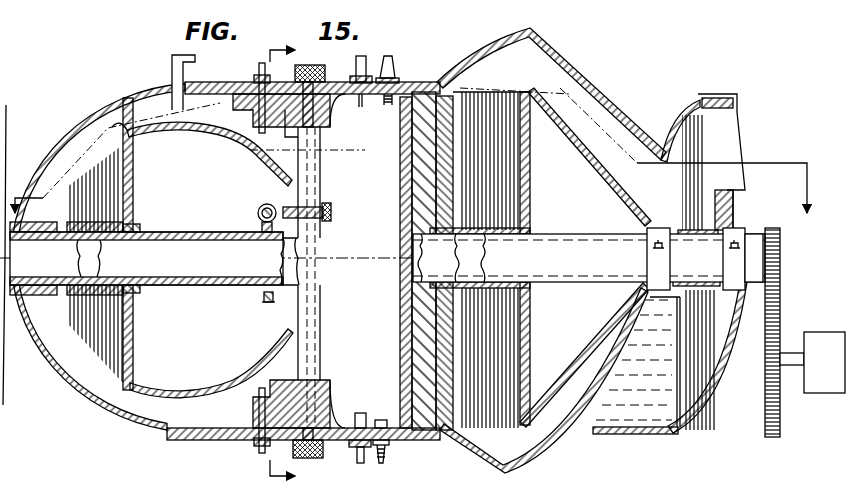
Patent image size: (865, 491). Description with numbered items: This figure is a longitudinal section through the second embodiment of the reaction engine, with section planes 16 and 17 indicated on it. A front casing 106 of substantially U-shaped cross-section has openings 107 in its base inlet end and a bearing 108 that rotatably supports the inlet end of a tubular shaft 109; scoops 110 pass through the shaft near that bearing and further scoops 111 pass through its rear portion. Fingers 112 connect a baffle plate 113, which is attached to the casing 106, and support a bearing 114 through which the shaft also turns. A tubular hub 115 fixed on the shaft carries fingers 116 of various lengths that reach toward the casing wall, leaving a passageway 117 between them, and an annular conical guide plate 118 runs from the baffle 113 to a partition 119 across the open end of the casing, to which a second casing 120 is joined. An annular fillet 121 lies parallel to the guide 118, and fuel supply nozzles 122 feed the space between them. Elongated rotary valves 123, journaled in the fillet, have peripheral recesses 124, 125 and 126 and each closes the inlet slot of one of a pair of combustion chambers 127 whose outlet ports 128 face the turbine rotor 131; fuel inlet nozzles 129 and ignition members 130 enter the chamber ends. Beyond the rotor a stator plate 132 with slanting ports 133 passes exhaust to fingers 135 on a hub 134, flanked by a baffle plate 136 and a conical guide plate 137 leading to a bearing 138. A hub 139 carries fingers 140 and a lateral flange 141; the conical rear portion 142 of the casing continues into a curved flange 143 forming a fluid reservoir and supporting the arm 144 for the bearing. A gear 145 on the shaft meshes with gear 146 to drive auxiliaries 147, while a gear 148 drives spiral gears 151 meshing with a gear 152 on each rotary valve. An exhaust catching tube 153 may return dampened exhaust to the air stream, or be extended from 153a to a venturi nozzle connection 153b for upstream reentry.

The front casing 106 is at (84, 408).
The openings 107 is at (30, 330).
The bearing 108 is at (98, 257).
The tubular shaft 109 is at (170, 240).
The scoops 110 is at (95, 274).
The scoops 111 is at (589, 258).
The fingers 112 is at (114, 125).
The baffle plate 113 is at (134, 177).
The bearing 114 is at (136, 232).
The tubular hub 115 is at (136, 309).
The fingers 116 is at (100, 350).
The passageway 117 is at (111, 395).
The annular conical guide plate 118 is at (200, 142).
The partition 119 is at (316, 180).
The second casing 120 is at (430, 82).
The annular fillet 121 is at (240, 86).
The fuel supply nozzles 122 is at (258, 100).
The rotary valves 123 is at (318, 357).
The peripheral recess 124 is at (292, 364).
The peripheral recess 125 is at (296, 262).
The peripheral recess 126 is at (298, 172).
The combustion chambers 127 is at (402, 137).
The outlet ports 128 is at (400, 290).
The fuel inlet nozzles 129 is at (364, 60).
The ignition members 130 is at (392, 64).
The turbine rotor 131 is at (418, 440).
The stator plate 132 is at (482, 90).
The slanting ports 133 is at (448, 400).
The hub 134 is at (530, 220).
The fingers 135 is at (492, 186).
The baffle plate 136 is at (531, 333).
The conical guide plate 137 is at (616, 165).
The bearing 138 is at (655, 228).
The hub 139 is at (735, 230).
The fingers 140 is at (700, 182).
The lateral flange 141 is at (727, 213).
The conical open end rear portion 142 is at (632, 100).
The curved flange 143 is at (652, 437).
The arm 144 is at (692, 402).
The gear 145 is at (768, 262).
The gear 146 is at (780, 322).
The auxiliaries 147 is at (815, 388).
The gear 148 is at (264, 300).
The spiral gears 151 is at (257, 218).
The gear 152 is at (331, 213).
The exhaust catching tube 153 is at (737, 103).
The exhaust tube extension point 153a is at (688, 100).
The venturi nozzle connection 153b is at (172, 56).
The section line 16 is at (294, 259).
The section line 17 is at (421, 151).